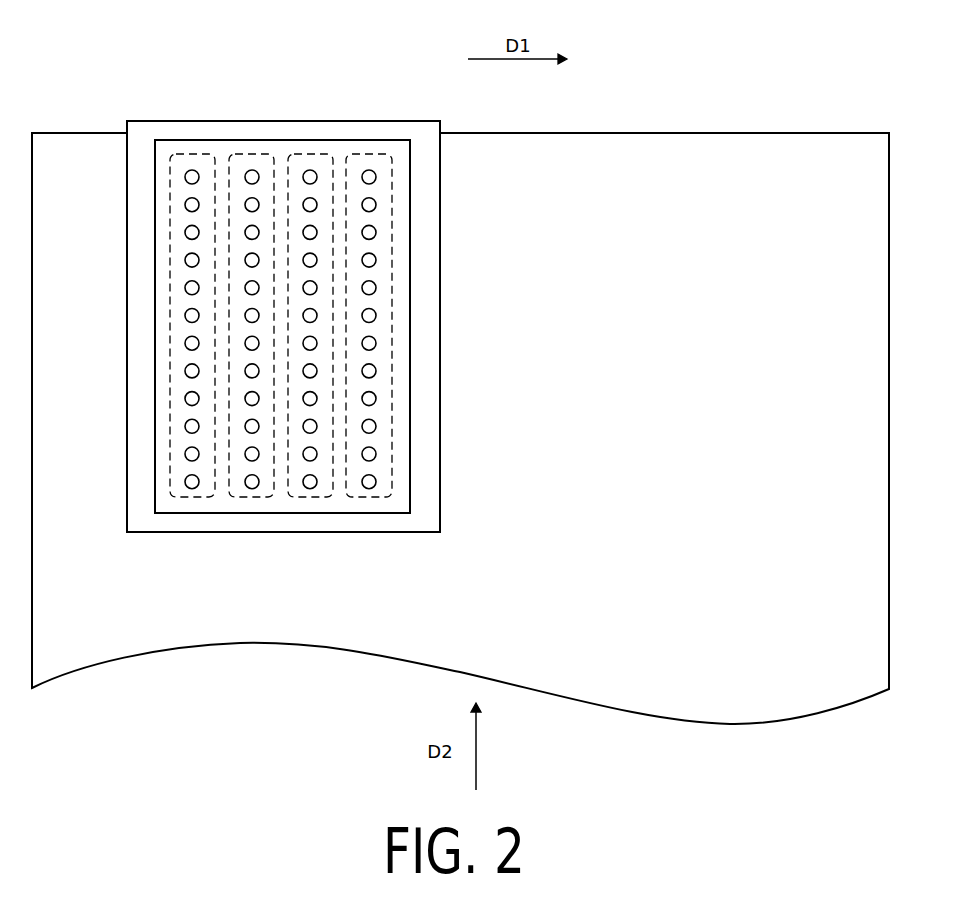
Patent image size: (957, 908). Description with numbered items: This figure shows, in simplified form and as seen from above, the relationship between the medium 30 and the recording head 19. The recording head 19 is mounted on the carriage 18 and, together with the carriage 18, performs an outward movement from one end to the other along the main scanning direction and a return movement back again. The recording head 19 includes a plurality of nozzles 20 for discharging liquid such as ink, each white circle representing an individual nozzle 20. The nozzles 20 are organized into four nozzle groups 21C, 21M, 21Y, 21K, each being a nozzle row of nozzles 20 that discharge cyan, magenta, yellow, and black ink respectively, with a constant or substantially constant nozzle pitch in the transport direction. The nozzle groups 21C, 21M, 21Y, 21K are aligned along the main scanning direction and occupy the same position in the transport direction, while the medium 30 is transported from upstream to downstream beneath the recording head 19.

The carriage 18 is at (440, 178).
The recording head 19 is at (155, 290).
The nozzle 20 is at (376, 287).
The nozzle group 21C is at (181, 152).
The nozzle group 21M is at (248, 152).
The nozzle group 21Y is at (319, 152).
The nozzle group 21K is at (367, 152).
The medium 30 is at (337, 633).